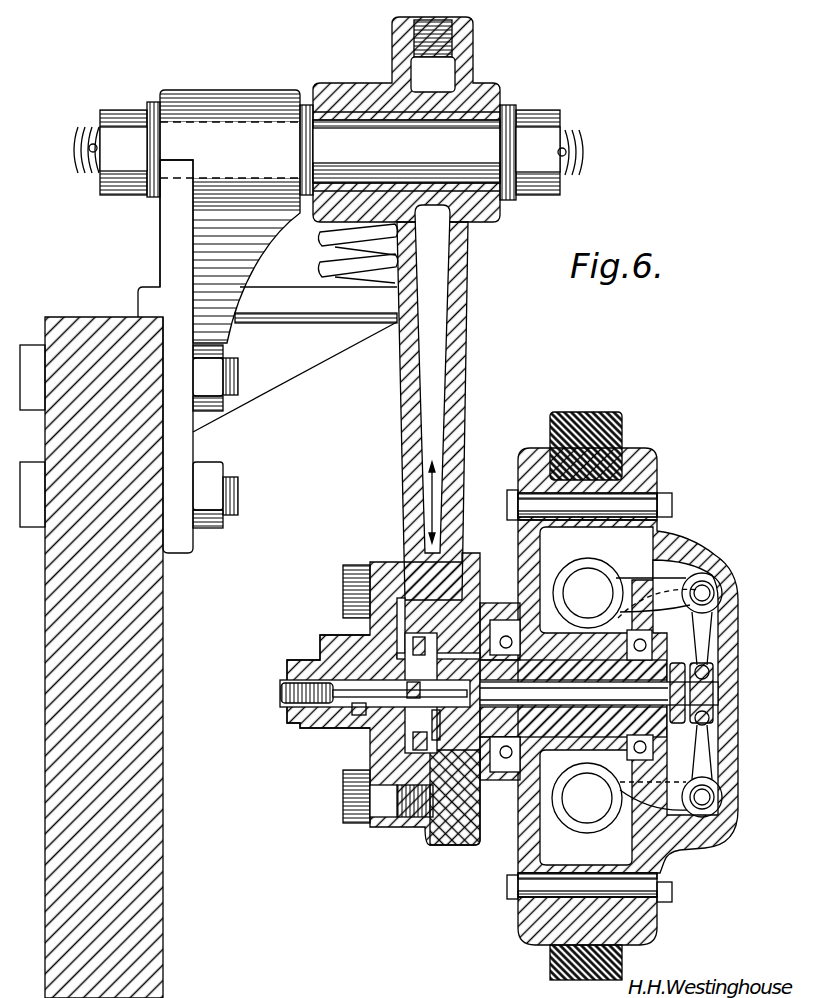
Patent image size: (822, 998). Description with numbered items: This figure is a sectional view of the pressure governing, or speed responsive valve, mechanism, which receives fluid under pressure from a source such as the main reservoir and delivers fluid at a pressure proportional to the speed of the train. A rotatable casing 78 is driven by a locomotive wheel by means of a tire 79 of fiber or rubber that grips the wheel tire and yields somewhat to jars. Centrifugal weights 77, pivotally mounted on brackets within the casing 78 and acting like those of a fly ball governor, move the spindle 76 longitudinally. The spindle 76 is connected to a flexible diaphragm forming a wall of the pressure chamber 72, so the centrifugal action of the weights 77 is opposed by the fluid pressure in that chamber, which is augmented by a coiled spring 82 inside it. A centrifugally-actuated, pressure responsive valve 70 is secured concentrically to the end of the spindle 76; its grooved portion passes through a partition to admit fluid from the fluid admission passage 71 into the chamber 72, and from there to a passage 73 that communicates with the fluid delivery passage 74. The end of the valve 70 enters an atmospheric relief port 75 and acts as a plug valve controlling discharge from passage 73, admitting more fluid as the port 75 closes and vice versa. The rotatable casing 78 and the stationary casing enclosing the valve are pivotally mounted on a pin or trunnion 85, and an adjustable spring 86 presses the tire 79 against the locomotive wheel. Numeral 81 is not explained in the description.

The pin or trunnion 85 is at (328, 180).
The adjustable spring 86 is at (333, 283).
The fluid delivery passage 74 is at (397, 382).
The passage 73 is at (337, 648).
The centrifugally-actuated, pressure responsive valve 70 is at (320, 657).
The atmospheric relief port 75 is at (287, 693).
The fluid admission passage 71 is at (358, 720).
The coiled spring 82 is at (413, 720).
The pressure chamber 72 is at (427, 725).
The port 81 is at (437, 639).
The centrifugally controlled spindle 76 is at (599, 693).
The centrifugal weights 77 is at (637, 695).
The rotatable casing 78 is at (693, 547).
The tire 79 is at (580, 412).